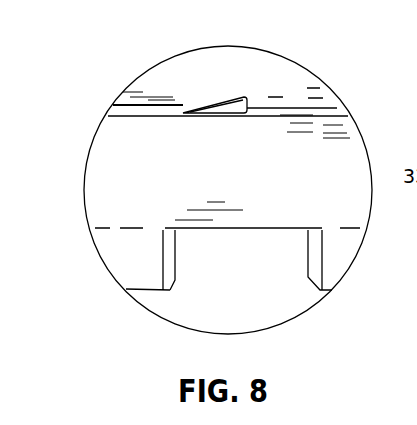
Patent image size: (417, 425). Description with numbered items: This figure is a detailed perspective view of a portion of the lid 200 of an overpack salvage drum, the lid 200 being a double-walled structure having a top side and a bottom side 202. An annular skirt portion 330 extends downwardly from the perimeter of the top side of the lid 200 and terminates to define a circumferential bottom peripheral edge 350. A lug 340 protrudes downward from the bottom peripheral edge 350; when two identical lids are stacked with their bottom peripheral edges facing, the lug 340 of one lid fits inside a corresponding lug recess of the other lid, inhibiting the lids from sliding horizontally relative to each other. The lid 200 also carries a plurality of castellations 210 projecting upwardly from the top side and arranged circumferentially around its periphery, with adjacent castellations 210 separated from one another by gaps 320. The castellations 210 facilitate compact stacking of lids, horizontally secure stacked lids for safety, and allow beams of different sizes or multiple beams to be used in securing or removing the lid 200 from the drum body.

The bottom side 202 is at (177, 68).
The bottom peripheral edge 350 is at (138, 108).
The lug 340 is at (244, 97).
The annular skirt portion 330 is at (110, 152).
The lid 200 is at (347, 148).
The gap 320 is at (238, 258).
The castellation 210 is at (342, 260).